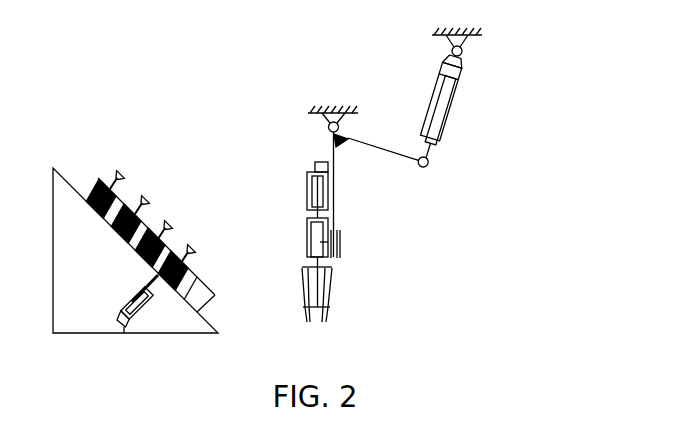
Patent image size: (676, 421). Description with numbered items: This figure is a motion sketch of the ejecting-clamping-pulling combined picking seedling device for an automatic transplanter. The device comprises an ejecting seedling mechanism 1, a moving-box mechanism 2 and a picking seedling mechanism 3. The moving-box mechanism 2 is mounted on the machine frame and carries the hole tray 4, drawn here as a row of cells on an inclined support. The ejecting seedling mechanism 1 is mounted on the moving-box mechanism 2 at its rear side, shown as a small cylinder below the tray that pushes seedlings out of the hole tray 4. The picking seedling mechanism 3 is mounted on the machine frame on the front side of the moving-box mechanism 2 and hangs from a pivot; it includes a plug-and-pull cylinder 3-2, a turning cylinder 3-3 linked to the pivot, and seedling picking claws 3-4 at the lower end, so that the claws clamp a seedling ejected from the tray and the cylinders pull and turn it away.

The ejecting seedling mechanism 1 is at (152, 304).
The moving-box mechanism 2 is at (135, 232).
The picking seedling mechanism 3 is at (374, 175).
The plug-and-pull cylinder 3-2 is at (270, 181).
The turning cylinder 3-3 is at (476, 97).
The seedling picking claws 3-4 is at (276, 260).
The hole tray 4 is at (150, 222).